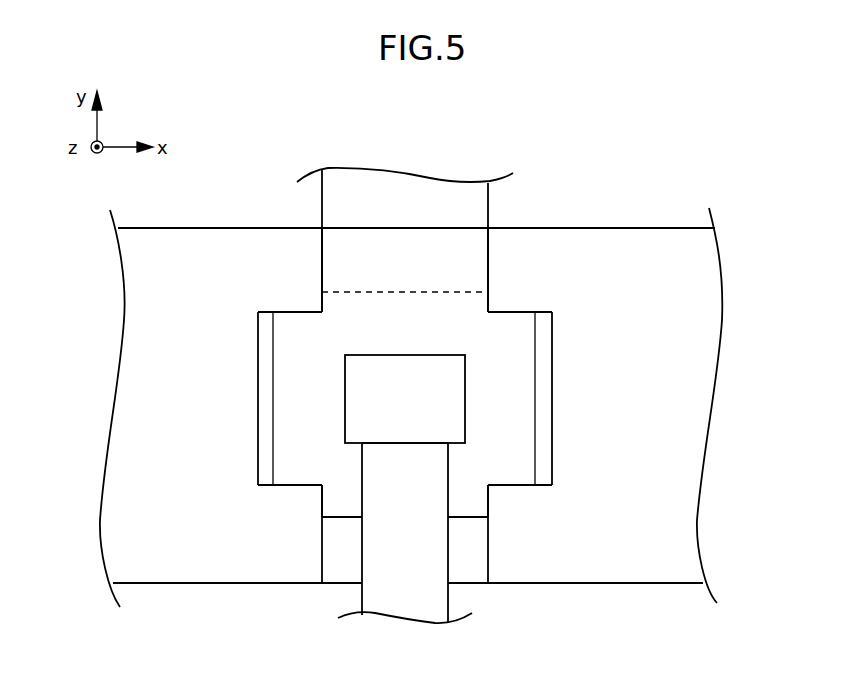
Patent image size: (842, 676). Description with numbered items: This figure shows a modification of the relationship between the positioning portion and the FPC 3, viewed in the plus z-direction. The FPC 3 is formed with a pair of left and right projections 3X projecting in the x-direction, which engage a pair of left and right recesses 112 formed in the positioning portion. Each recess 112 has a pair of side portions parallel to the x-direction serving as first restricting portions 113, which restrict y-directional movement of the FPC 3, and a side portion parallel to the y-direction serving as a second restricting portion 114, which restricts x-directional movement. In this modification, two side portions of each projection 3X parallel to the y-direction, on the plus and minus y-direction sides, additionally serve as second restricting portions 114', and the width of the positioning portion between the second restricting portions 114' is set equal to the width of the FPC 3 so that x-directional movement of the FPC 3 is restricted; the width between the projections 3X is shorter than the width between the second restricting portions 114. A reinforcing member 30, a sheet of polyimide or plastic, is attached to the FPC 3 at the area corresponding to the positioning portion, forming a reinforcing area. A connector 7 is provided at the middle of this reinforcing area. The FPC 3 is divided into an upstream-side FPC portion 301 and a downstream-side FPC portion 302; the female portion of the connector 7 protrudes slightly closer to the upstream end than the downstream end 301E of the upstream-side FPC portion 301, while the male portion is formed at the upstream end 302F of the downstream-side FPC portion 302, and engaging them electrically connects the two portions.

The FPC 3 is at (475, 203).
The upstream-side FPC portion 301 is at (333, 193).
The reinforcing member 30 is at (452, 310).
The first restricting portion 113 is at (293, 308).
The second restricting portion 114' is at (432, 400).
The second restricting portion 114 is at (407, 398).
The recess 112 is at (265, 442).
The projection 3X is at (288, 453).
The connector 7 is at (400, 357).
The upstream end of downstream-side FPC portion 302F is at (413, 442).
The downstream-side FPC portion 302 is at (435, 603).
The downstream end of upstream-side FPC portion 301E is at (342, 518).